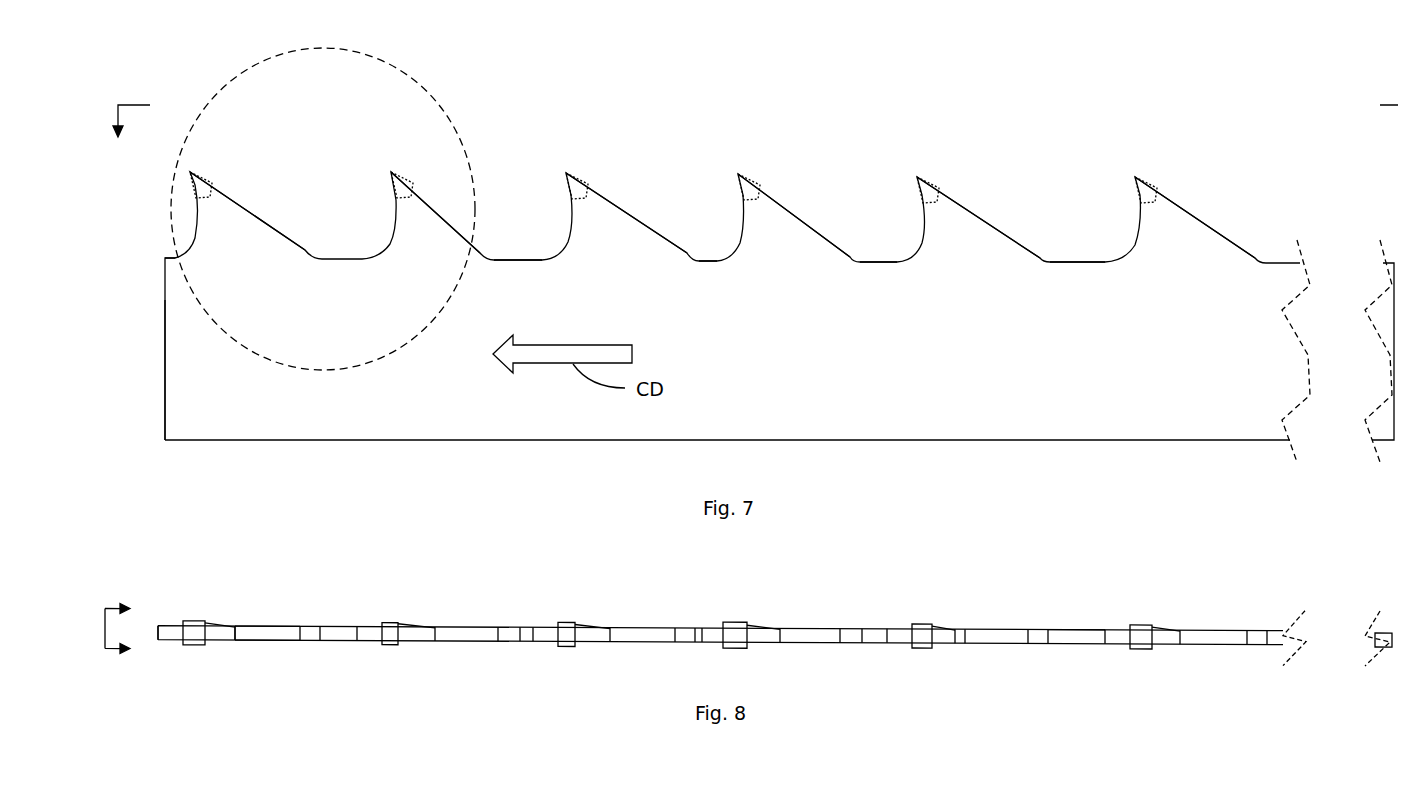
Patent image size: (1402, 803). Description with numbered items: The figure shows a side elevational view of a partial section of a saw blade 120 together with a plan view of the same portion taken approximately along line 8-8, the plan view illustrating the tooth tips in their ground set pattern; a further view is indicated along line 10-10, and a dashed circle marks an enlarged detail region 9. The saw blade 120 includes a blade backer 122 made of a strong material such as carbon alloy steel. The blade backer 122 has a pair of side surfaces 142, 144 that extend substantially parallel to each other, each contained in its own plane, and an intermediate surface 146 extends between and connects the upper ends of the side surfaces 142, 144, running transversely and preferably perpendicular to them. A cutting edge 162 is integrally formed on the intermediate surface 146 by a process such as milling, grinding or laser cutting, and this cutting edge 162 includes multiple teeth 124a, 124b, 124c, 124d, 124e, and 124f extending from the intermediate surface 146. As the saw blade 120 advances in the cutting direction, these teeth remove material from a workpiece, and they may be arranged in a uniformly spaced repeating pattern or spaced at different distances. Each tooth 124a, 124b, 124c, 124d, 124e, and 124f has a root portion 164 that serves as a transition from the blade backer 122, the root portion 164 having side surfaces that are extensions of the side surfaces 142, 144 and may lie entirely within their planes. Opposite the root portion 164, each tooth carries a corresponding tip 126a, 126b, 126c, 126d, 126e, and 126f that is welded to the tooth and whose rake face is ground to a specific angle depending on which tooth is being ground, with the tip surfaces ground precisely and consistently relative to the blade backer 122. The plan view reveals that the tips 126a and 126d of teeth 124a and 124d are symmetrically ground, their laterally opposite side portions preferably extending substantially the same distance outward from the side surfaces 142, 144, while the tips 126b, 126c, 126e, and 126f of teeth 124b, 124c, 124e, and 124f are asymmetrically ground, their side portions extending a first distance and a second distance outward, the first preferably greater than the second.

In FIG. 7, the detail circle (FIG. 9 region) 9 is at (458, 129).
In FIG. 7, the section line 8- 8 is at (755, 137).
In FIG. 8, the section line 10- 10 is at (132, 628).
In FIG. 7, the saw blade 120 is at (810, 130).
In FIG. 8, the saw blade 120 is at (163, 582).
In FIG. 7, the blade backer 122 is at (985, 420).
In FIG. 8, the blade backer 122 is at (960, 627).
In FIG. 7, the tooth 124a is at (233, 207).
In FIG. 8, the tooth 124a is at (225, 644).
In FIG. 7, the tooth 124b is at (433, 213).
In FIG. 8, the tooth 124b is at (420, 641).
In FIG. 7, the tooth 124c is at (600, 208).
In FIG. 8, the tooth 124c is at (595, 641).
In FIG. 7, the tooth 124d is at (770, 205).
In FIG. 8, the tooth 124d is at (775, 641).
In FIG. 7, the tooth 124e is at (955, 217).
In FIG. 8, the tooth 124e is at (945, 641).
In FIG. 7, the tooth 124f is at (1183, 217).
In FIG. 8, the tooth 124f is at (1170, 641).
In FIG. 7, the tip 126a is at (192, 172).
In FIG. 8, the tip 126a is at (199, 618).
In FIG. 7, the tip 126b is at (392, 170).
In FIG. 8, the tip 126b is at (392, 619).
In FIG. 7, the tip 126c is at (566, 173).
In FIG. 8, the tip 126c is at (570, 619).
In FIG. 7, the tip 126d is at (738, 174).
In FIG. 8, the tip 126d is at (738, 619).
In FIG. 7, the tip 126e is at (917, 177).
In FIG. 8, the tip 126e is at (922, 619).
In FIG. 7, the tip 126f is at (1135, 177).
In FIG. 8, the tip 126f is at (1140, 619).
In FIG. 8, the side surface 142 is at (258, 623).
In FIG. 7, the side surface 144 is at (1115, 396).
In FIG. 8, the side surface 144 is at (250, 641).
In FIG. 7, the intermediate surface 146 is at (1080, 262).
In FIG. 8, the intermediate surface 146 is at (1065, 633).
In FIG. 7, the cutting edge 162 is at (150, 226).
In FIG. 7, the root portion 164 is at (620, 262).